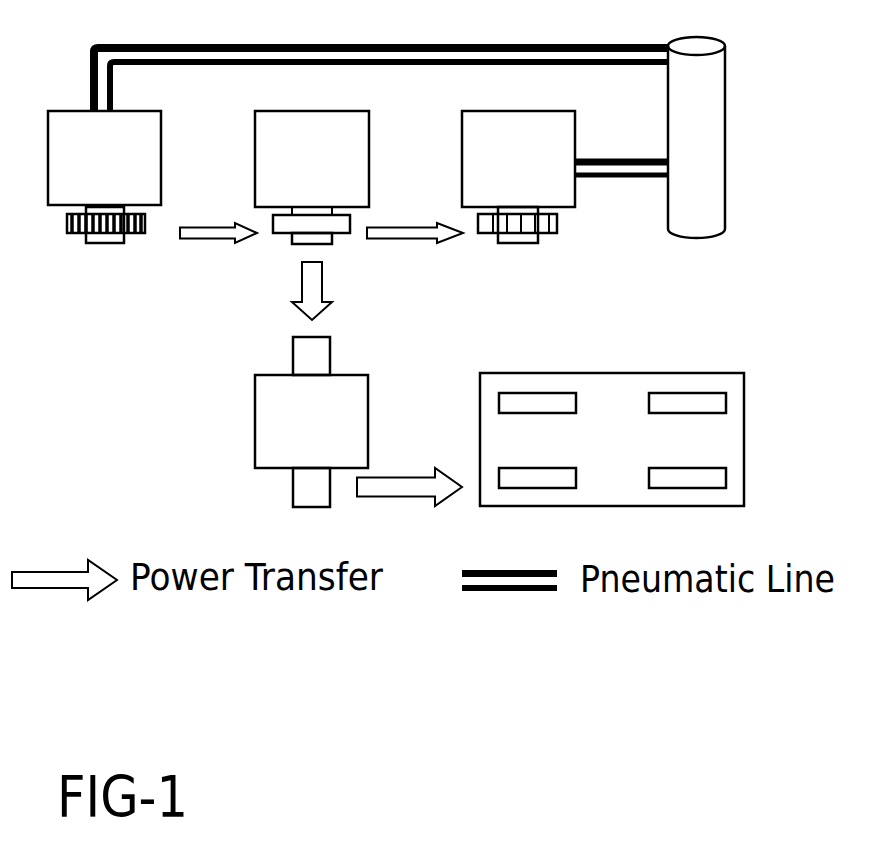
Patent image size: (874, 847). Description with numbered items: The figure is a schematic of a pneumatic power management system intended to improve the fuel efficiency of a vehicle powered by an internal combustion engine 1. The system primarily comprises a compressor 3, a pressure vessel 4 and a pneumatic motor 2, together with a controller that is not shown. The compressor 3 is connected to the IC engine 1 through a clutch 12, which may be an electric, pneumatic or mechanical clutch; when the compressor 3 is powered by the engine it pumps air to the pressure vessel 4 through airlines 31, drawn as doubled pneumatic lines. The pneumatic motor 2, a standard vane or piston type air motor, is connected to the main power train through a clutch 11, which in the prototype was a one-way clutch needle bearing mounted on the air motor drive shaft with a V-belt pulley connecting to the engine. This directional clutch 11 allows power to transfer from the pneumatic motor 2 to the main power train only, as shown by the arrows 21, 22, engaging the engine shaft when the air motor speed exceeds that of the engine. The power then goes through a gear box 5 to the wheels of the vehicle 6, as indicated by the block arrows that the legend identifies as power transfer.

The internal combustion engine 1 is at (312, 177).
The pneumatic motor 2 is at (104, 158).
The compressor 3 is at (518, 159).
The pressure vessel 4 is at (696, 137).
The gear box 5 is at (311, 422).
The wheels of the vehicle 6 is at (612, 439).
The clutch 11 is at (42, 233).
The clutch 12 is at (590, 225).
The arrow 21 is at (281, 291).
The arrow 22 is at (407, 448).
The airlines 31 is at (599, 127).